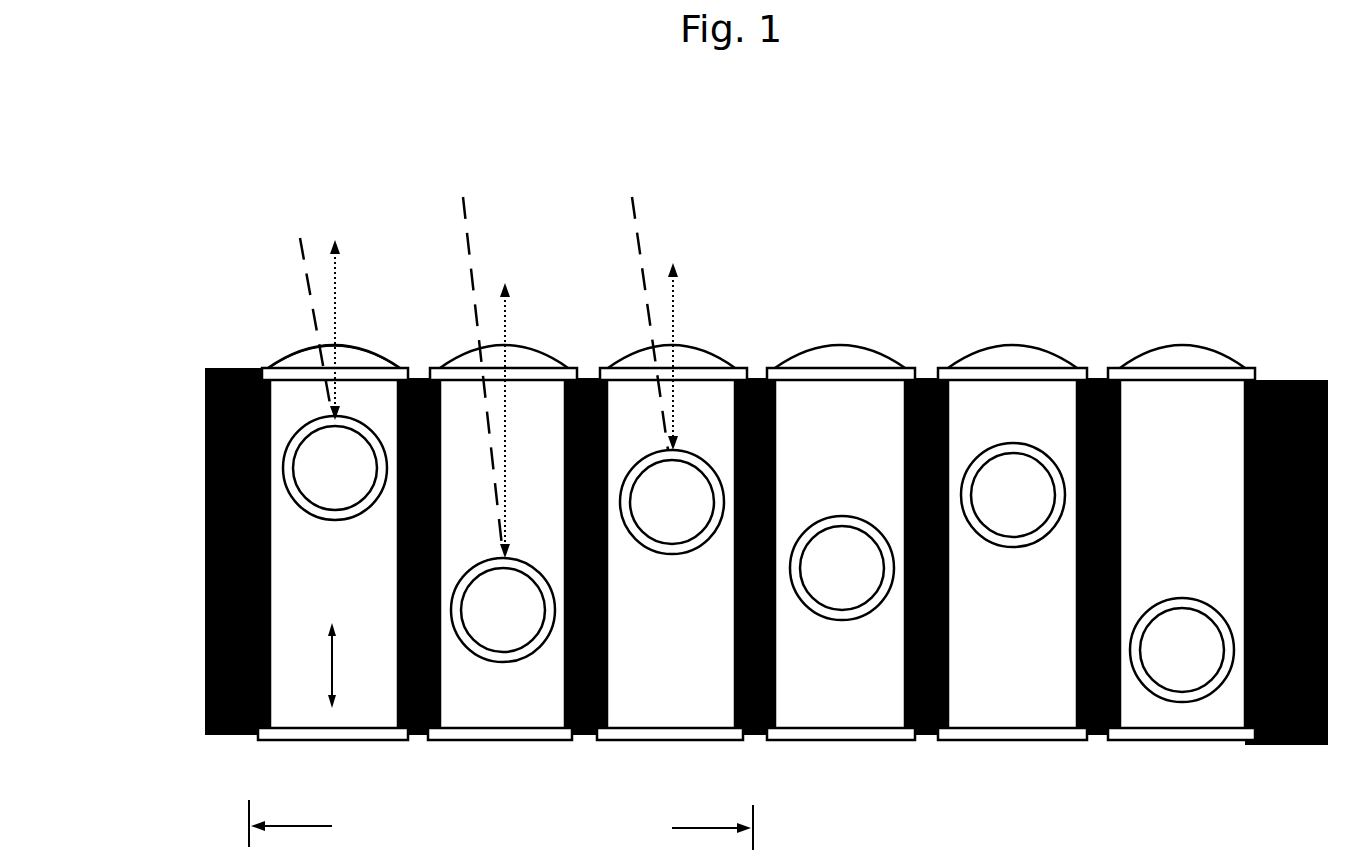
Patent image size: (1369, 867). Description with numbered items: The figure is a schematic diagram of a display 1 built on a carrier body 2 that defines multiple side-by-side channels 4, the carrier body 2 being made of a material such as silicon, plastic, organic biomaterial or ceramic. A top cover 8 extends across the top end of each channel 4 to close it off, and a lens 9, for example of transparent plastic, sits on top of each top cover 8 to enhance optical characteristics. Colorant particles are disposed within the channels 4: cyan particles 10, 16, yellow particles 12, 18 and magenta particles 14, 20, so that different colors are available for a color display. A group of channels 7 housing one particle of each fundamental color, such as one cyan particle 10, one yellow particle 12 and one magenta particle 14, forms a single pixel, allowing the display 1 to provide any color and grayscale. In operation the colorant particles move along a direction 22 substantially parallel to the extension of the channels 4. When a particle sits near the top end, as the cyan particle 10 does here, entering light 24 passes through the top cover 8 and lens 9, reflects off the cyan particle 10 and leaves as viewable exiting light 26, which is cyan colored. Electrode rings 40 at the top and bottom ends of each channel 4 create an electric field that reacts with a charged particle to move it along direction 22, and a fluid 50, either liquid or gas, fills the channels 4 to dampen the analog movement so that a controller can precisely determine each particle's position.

The display 1 is at (726, 462).
The carrier body 2 is at (208, 455).
The channels 4 is at (306, 575).
The group of channels 7 is at (501, 825).
The top cover 8 is at (405, 366).
The lens 9 is at (292, 348).
The cyan particle 10 is at (300, 506).
The yellow particle 12 is at (512, 664).
The magenta particle 14 is at (667, 556).
The cyan particle 16 is at (830, 517).
The yellow particle 18 is at (1000, 442).
The magenta particle 20 is at (1181, 598).
The direction 22 is at (334, 653).
The entering light 24 is at (298, 220).
The viewable exiting light 26 is at (338, 297).
The electrode rings 40 is at (1047, 726).
The fluid 50 is at (470, 704).